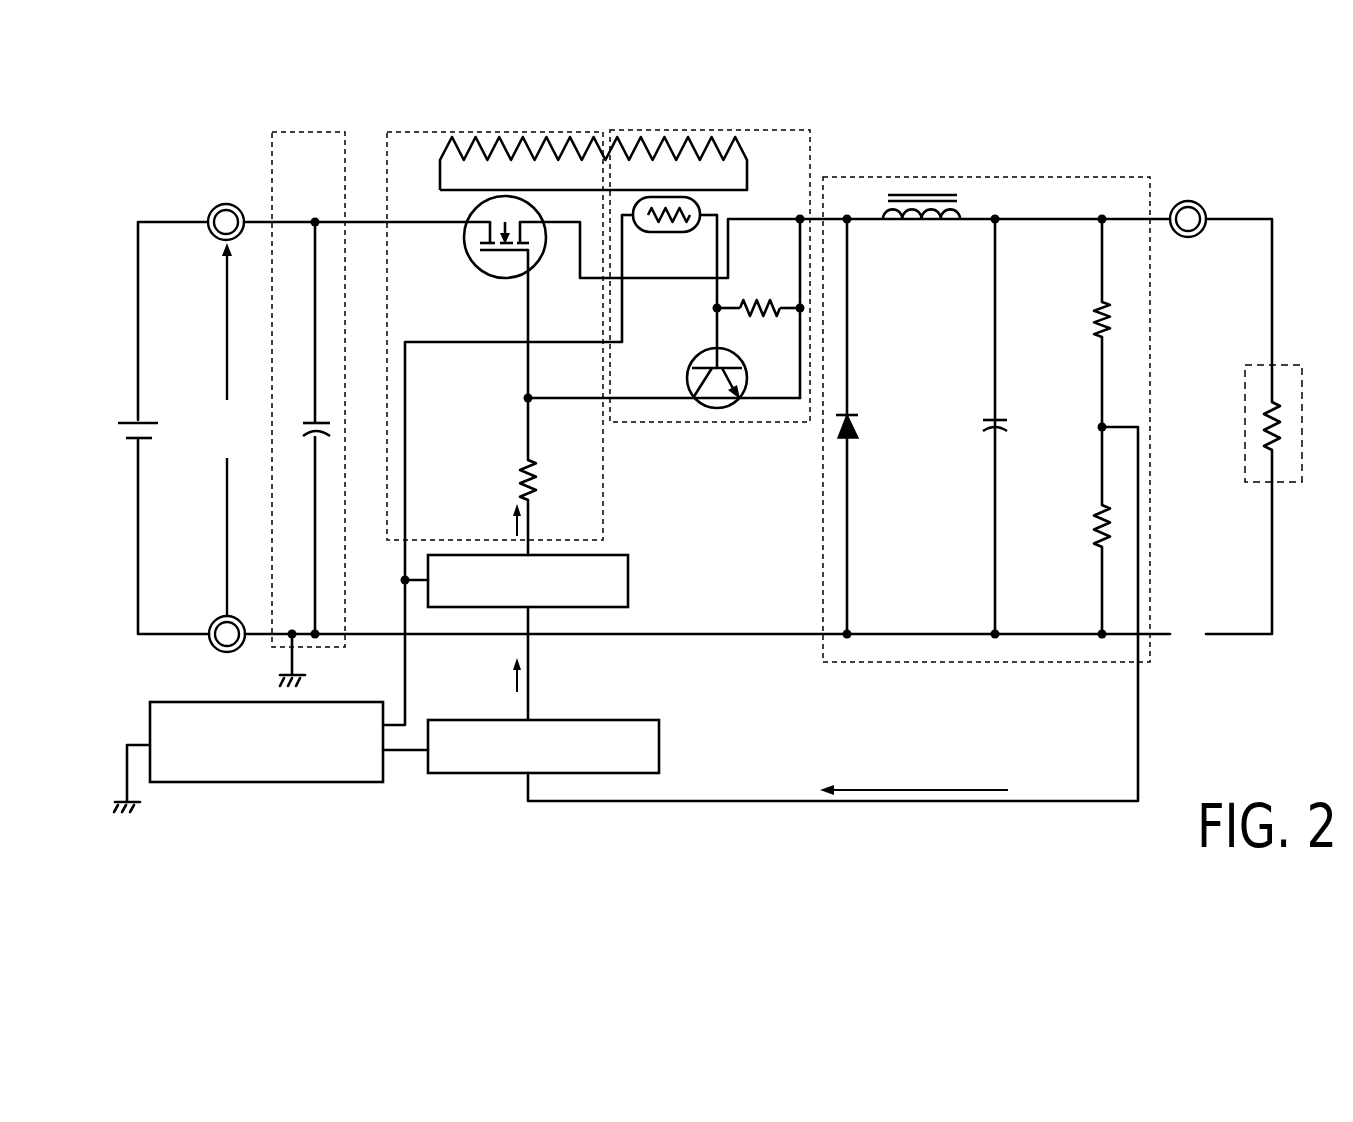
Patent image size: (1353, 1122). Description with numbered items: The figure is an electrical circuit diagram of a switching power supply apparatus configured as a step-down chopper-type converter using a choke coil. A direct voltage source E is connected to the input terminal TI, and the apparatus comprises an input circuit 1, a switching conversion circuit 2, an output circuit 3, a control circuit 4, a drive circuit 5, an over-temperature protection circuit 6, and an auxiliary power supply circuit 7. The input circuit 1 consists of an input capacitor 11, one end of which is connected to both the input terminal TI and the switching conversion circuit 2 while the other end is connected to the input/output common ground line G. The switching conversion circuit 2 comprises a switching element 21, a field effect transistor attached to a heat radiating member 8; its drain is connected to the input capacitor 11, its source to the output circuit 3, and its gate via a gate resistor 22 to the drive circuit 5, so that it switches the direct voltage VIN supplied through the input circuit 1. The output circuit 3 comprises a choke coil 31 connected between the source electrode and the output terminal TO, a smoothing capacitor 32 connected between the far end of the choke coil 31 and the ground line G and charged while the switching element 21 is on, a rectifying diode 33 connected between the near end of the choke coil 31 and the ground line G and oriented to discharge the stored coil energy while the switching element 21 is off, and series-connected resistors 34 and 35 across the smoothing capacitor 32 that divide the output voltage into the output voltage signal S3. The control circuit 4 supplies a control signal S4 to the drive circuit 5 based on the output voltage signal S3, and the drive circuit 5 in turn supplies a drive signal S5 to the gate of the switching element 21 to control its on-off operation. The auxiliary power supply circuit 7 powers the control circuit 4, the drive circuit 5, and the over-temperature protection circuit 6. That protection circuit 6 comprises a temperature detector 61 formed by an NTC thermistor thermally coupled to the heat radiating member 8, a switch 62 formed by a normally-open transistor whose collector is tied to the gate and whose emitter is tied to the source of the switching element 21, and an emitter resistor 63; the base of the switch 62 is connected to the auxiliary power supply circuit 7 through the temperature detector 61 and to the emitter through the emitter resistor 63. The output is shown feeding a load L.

The input circuit 1 is at (308, 357).
The switching conversion circuit 2 is at (495, 303).
The output circuit 3 is at (986, 388).
The control circuit 4 is at (565, 746).
The drive circuit 5 is at (550, 581).
The over-temperature protection circuit 6 is at (710, 244).
The auxiliary power supply circuit 7 is at (266, 771).
The heat radiating member 8 is at (570, 168).
The input capacitor 11 is at (307, 428).
The switching element 21 is at (505, 264).
The gate resistor 22 is at (495, 478).
The choke coil 31 is at (921, 243).
The smoothing capacitor 32 is at (1025, 422).
The rectifying diode 33 is at (875, 422).
The resistor 34 is at (1069, 318).
The resistor 35 is at (1069, 526).
The temperature detector 61 is at (669, 240).
The switch 62 is at (741, 378).
The emitter resistor 63 is at (758, 277).
The input terminal TI is at (226, 191).
The output terminal TO is at (1188, 187).
The direct voltage source E is at (116, 438).
The load L is at (1269, 394).
The input/output common ground line G is at (735, 665).
The direct voltage VIN is at (227, 429).
The output voltage signal S3 is at (914, 765).
The control signal S4 is at (488, 678).
The drive signal S5 is at (488, 524).